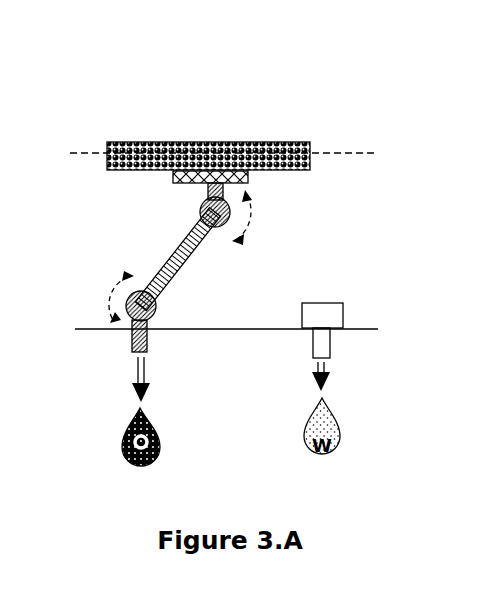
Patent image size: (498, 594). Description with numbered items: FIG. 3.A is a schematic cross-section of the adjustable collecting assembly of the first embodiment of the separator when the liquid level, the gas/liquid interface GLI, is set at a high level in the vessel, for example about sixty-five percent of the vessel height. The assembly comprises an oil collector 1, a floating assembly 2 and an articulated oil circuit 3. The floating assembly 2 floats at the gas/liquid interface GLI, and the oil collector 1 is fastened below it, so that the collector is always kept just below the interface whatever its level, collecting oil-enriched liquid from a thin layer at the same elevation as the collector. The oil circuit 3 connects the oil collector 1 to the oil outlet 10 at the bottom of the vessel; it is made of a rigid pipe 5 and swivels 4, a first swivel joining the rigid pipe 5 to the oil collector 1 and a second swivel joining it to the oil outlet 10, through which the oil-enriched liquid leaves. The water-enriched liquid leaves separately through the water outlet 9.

The oil collector 1 is at (260, 184).
The floating assembly 2 is at (145, 130).
The oil circuit 3 is at (259, 303).
The swivels 4 is at (194, 212).
The rigid pipe 5 is at (200, 271).
The water outlet 9 is at (336, 335).
The oil outlet 10 is at (124, 350).
The gas/liquid interface GLI is at (369, 141).